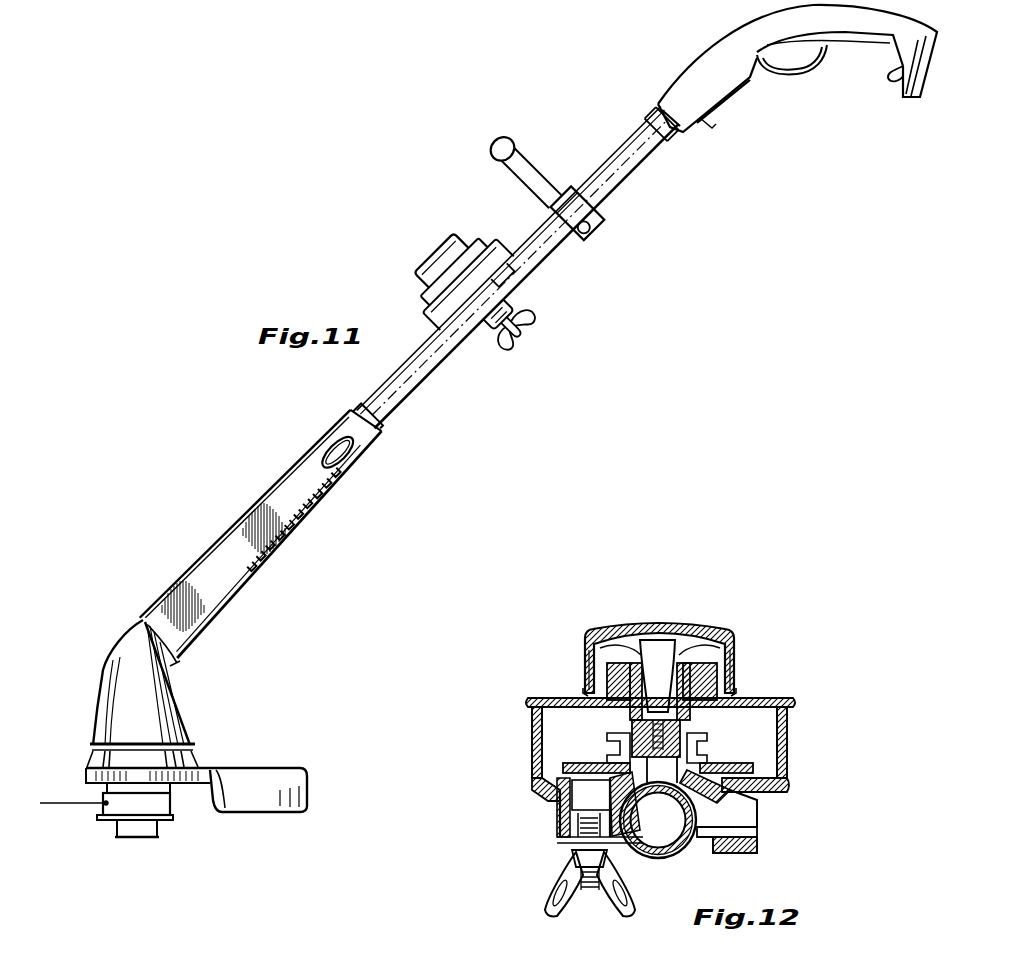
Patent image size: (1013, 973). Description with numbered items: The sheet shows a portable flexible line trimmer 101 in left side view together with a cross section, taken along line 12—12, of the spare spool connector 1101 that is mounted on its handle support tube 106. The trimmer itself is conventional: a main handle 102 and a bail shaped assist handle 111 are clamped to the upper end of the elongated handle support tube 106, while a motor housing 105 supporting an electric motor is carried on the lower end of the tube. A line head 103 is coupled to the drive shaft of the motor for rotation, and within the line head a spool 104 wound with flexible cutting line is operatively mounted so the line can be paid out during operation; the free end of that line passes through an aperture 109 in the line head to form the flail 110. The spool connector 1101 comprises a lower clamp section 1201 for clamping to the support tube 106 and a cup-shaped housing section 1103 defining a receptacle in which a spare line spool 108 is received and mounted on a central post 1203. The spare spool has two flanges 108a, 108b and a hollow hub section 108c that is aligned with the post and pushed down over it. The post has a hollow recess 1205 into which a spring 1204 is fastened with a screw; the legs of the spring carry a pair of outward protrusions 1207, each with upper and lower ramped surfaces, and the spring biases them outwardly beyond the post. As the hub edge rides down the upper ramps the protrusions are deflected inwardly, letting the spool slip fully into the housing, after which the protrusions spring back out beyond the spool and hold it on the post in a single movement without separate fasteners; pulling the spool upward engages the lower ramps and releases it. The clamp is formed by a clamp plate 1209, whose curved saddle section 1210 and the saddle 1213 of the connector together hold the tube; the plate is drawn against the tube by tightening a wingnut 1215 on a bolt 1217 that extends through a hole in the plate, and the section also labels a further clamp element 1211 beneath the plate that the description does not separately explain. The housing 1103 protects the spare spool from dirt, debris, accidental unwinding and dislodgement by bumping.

In FIG. 11, the flexible line trimmer 101 is at (361, 188).
In FIG. 11, the main handle 102 is at (735, 33).
In FIG. 11, the line head 103 is at (170, 807).
In FIG. 11, the spool 104 is at (165, 832).
In FIG. 11, the motor housing 105 is at (187, 572).
In FIG. 11, the handle support tube 106 is at (627, 178).
In FIG. 12, the handle support tube 106 is at (765, 828).
In FIG. 11, the spare line spool 108 is at (437, 247).
In FIG. 12, the spare line spool 108 is at (663, 675).
In FIG. 12, the flange 108a is at (760, 704).
In FIG. 12, the flange 108b is at (742, 760).
In FIG. 12, the hollow hub section 108c is at (625, 714).
In FIG. 11, the aperture 109 is at (131, 828).
In FIG. 11, the flail 110 is at (71, 808).
In FIG. 11, the assist handle 111 is at (504, 136).
In FIG. 11, the section line 12- 12 is at (389, 249).
In FIG. 11, the spool connector 1101 is at (414, 258).
In FIG. 12, the cup-shaped housing section 1103 is at (540, 745).
In FIG. 12, the lower clamp section 1201 is at (556, 810).
In FIG. 12, the central post 1203 is at (603, 680).
In FIG. 12, the spring 1204 is at (660, 660).
In FIG. 12, the hollow recess 1205 is at (703, 632).
In FIG. 12, the outward protrusions 1207 is at (611, 643).
In FIG. 12, the clamp plate 1209 is at (700, 842).
In FIG. 12, the curved saddle section 1210 is at (656, 860).
In FIG. 12, the clamp plate 1211 is at (760, 845).
In FIG. 12, the saddle 1213 is at (762, 796).
In FIG. 12, the wingnut 1215 is at (545, 902).
In FIG. 12, the bolt 1217 is at (583, 823).